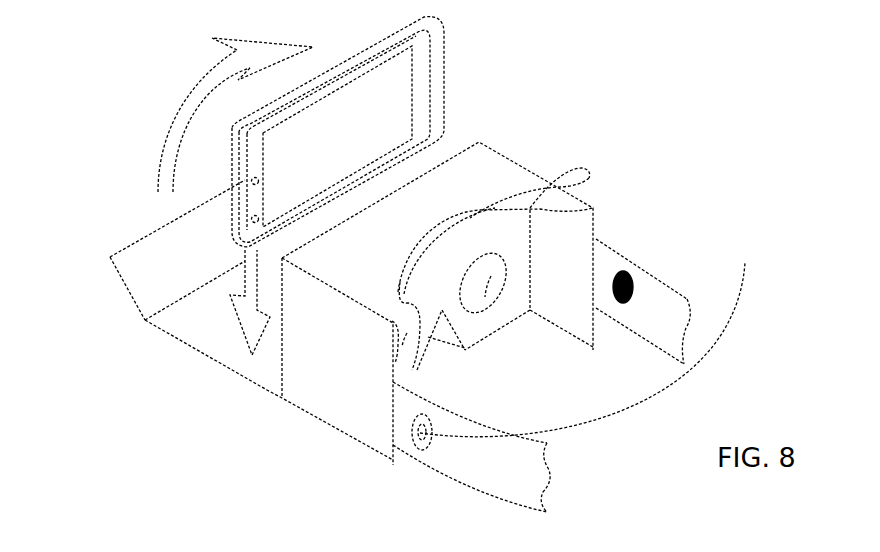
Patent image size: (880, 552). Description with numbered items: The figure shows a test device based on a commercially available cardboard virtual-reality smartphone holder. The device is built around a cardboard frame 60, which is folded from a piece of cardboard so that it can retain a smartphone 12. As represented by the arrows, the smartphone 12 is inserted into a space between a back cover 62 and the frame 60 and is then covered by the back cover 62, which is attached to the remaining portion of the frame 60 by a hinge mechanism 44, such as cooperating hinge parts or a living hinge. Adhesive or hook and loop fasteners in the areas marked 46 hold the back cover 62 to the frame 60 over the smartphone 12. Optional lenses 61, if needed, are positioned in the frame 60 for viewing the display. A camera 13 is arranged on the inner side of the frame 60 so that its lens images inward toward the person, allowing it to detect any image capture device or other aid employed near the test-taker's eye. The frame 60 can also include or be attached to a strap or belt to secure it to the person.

The smartphone 12 is at (396, 102).
The camera 13 is at (637, 280).
The hinge mechanism 44 is at (265, 390).
The attachment areas 46 is at (330, 248).
The cardboard frame 60 is at (390, 256).
The lenses 61 is at (483, 263).
The back cover 62 is at (192, 276).